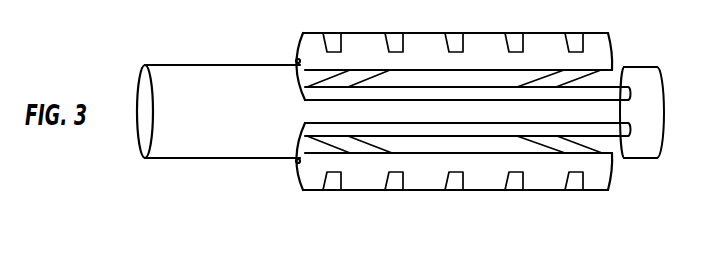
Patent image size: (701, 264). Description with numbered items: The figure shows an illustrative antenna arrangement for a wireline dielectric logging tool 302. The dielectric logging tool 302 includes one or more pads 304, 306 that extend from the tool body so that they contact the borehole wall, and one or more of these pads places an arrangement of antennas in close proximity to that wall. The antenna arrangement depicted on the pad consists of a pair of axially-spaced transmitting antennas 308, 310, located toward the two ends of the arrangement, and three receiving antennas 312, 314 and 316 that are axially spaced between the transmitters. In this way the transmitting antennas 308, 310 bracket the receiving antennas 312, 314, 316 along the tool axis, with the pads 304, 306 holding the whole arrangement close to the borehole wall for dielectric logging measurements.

The wireline dielectric logging tool 302 is at (175, 65).
The pad 304 is at (297, 175).
The pad 306 is at (297, 47).
The transmitting antenna 308 is at (329, 192).
The transmitting antenna 310 is at (574, 192).
The receiving antenna 312 is at (392, 192).
The receiving antenna 314 is at (453, 192).
The receiving antenna 316 is at (513, 192).